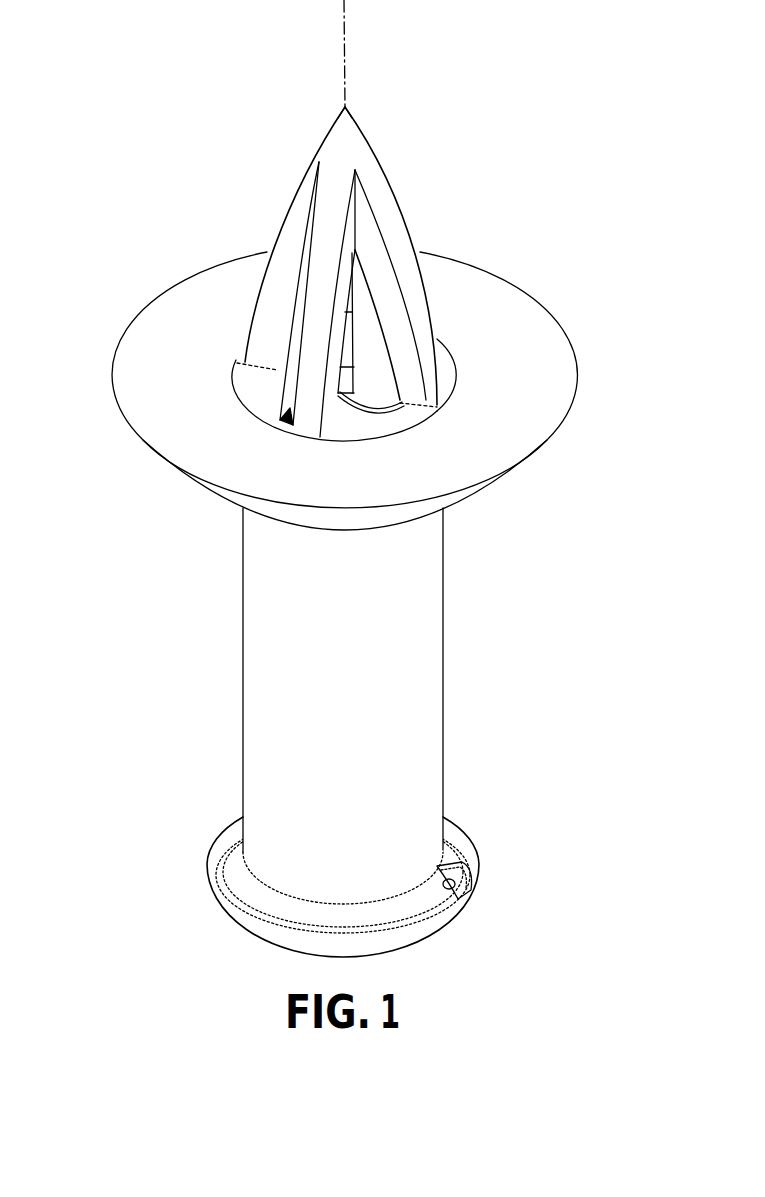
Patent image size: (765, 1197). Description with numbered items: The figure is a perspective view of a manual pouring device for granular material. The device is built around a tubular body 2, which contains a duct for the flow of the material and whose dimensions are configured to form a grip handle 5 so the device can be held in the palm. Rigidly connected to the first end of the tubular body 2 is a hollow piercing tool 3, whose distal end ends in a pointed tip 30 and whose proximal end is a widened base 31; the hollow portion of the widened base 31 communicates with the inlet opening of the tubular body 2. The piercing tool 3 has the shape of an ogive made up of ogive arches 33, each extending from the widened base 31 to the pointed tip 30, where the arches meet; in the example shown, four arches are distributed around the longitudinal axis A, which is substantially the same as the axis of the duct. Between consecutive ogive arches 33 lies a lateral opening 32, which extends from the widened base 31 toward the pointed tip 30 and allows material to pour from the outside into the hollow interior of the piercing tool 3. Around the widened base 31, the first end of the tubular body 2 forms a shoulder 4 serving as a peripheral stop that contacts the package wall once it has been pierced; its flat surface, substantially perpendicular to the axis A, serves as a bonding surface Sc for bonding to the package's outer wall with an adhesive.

The longitudinal axis A is at (347, 25).
The tubular body 2 is at (415, 648).
The hollow piercing tool 3 is at (421, 258).
The shoulder 4 is at (157, 340).
The grip handle 5 is at (415, 772).
The pointed tip 30 is at (343, 106).
The widened base 31 is at (415, 373).
The lateral opening 32 is at (370, 368).
The ogive arches 33 is at (320, 272).
The bonding surface Sc is at (545, 375).